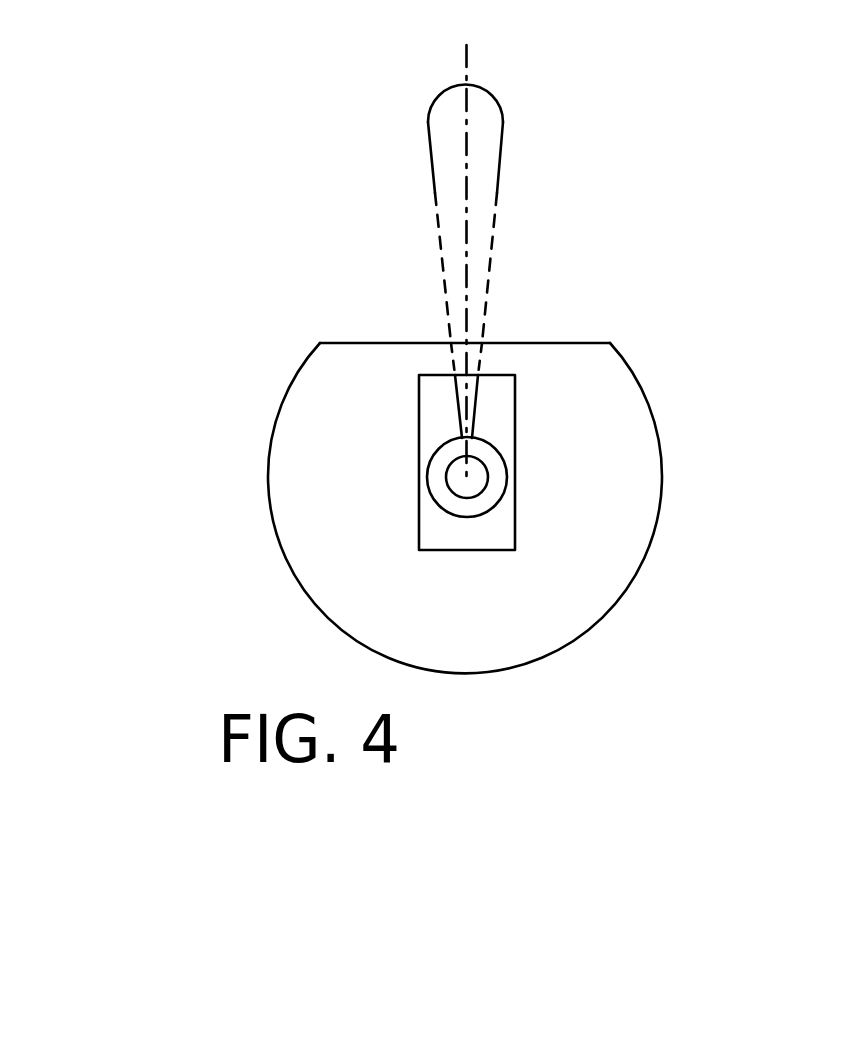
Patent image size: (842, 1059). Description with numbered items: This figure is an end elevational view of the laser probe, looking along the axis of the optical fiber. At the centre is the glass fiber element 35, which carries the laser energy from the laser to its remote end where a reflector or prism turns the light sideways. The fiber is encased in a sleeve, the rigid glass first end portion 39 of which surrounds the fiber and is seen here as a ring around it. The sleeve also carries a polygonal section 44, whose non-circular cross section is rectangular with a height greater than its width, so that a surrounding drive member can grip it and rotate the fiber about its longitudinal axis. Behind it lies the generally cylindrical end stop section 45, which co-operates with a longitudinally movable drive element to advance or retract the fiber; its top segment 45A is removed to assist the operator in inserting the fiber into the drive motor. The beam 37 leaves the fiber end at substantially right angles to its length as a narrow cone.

The beam 37 is at (502, 138).
The end stop section 45 is at (607, 343).
The top segment 45A is at (363, 343).
The polygonal section 44 is at (503, 405).
The first end portion 39 is at (475, 508).
The glass fiber element 35 is at (468, 482).